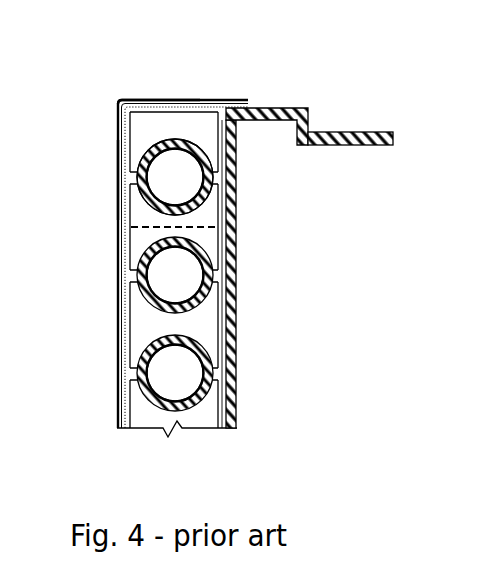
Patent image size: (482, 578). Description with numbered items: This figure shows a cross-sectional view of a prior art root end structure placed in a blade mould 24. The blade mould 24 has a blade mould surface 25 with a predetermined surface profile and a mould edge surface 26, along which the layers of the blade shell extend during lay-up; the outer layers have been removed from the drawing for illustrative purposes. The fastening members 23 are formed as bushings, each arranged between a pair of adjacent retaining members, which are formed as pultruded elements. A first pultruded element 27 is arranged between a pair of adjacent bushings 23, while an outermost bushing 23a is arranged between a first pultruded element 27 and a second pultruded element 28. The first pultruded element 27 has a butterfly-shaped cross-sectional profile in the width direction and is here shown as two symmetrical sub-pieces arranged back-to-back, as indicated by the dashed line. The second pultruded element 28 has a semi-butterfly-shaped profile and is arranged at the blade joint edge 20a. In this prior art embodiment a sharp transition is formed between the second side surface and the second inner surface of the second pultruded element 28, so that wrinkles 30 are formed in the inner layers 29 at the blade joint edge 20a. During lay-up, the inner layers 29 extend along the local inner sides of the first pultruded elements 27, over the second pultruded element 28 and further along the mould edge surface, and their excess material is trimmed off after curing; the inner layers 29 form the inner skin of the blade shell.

The first blade joint edge 20a is at (161, 83).
The fastening member 23 is at (206, 297).
The outermost bushing 23a is at (141, 188).
The blade mould 24 is at (331, 127).
The blade mould surface 25 is at (267, 106).
The mould edge surface 26 is at (228, 414).
The first pultruded element 27 is at (137, 317).
The second pultruded element 28 is at (165, 125).
The inner layers 29 is at (118, 176).
The wrinkles 30 is at (110, 98).